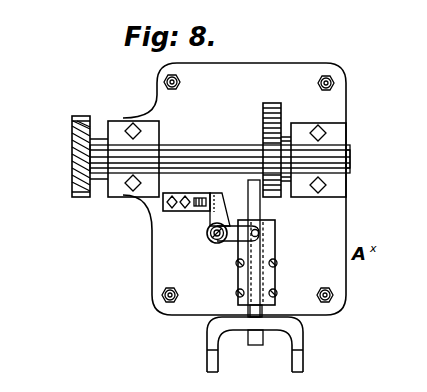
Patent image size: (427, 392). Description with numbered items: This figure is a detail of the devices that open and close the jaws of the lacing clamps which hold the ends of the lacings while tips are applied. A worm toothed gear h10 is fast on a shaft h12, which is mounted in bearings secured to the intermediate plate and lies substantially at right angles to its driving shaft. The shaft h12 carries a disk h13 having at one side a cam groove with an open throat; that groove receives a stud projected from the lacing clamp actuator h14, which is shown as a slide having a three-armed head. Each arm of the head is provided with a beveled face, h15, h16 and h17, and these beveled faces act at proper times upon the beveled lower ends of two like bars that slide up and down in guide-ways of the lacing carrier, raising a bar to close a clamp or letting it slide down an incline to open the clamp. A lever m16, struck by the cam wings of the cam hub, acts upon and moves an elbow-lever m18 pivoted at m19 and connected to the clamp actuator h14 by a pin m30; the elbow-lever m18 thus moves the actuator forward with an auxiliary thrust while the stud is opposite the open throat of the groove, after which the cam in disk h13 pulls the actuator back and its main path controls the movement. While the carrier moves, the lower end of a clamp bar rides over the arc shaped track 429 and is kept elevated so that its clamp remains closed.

The worm toothed gear h10 is at (72, 158).
The shaft h12 is at (195, 147).
The disk h13 is at (283, 118).
The lacing clamp actuator h14 is at (262, 245).
The beveled face h15 is at (207, 364).
The beveled face h16 is at (252, 347).
The beveled face h17 is at (305, 362).
The lever m16 is at (208, 209).
The elbow-lever m18 is at (212, 219).
The pivot m19 is at (213, 237).
The pin m30 is at (262, 233).
The arc shaped track 429 is at (300, 326).